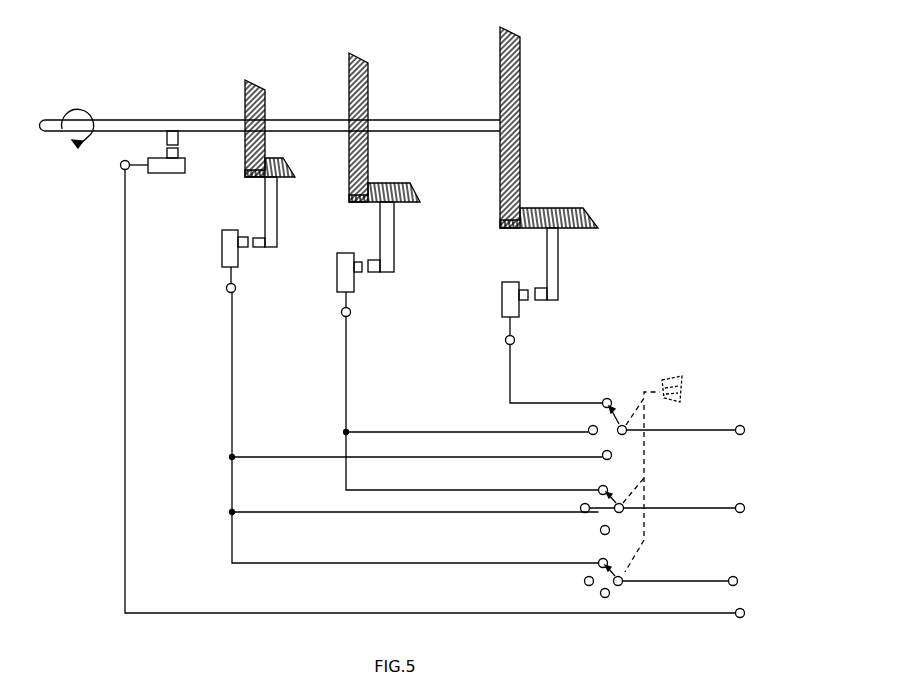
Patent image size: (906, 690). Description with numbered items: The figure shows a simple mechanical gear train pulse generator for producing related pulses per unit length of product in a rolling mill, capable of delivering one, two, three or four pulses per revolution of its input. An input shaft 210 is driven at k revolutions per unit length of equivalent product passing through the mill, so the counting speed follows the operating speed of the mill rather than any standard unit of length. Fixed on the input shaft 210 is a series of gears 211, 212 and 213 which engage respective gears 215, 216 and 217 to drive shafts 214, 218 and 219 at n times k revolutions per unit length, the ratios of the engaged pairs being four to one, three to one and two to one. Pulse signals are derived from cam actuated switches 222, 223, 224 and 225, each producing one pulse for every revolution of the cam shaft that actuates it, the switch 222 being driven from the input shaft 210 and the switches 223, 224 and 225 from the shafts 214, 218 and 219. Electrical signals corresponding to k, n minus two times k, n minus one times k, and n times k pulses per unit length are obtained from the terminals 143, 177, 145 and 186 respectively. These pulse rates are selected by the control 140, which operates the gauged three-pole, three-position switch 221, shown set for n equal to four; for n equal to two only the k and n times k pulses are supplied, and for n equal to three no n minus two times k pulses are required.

The input shaft 210 is at (122, 120).
The gear 211 is at (245, 100).
The gear 212 is at (349, 100).
The gear 213 is at (500, 100).
The shaft 214 is at (266, 206).
The gear 215 is at (289, 176).
The gear 216 is at (421, 197).
The gear 217 is at (555, 208).
The shaft 218 is at (381, 231).
The shaft 219 is at (547, 252).
The gauged three-pole, three-position switch 221 is at (657, 486).
The cam actuated switch 222 is at (172, 172).
The cam actuated switch 223 is at (222, 250).
The cam actuated switch 224 is at (337, 279).
The cam actuated switch 225 is at (502, 302).
The control 140 is at (675, 383).
The terminal 186 is at (738, 426).
The terminal 145 is at (741, 504).
The terminal 177 is at (730, 577).
The terminal 143 is at (736, 617).